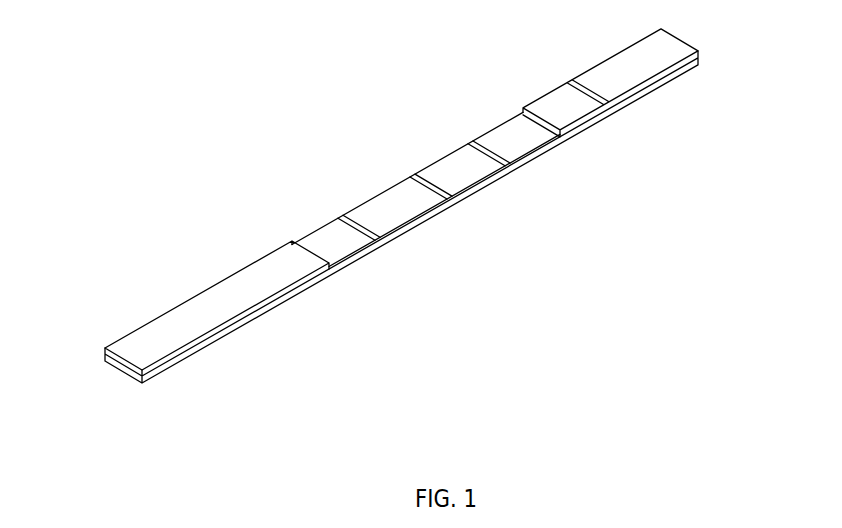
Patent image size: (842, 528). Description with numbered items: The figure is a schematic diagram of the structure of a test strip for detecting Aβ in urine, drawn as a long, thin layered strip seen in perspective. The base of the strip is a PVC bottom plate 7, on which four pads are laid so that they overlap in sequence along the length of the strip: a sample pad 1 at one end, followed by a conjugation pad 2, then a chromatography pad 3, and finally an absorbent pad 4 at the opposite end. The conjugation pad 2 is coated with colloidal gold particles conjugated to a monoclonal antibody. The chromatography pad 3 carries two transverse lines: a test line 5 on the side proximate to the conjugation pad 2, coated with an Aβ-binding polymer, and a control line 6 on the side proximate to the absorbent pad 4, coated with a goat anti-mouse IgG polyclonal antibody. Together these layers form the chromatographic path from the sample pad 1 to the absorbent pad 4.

The sample pad 1 is at (647, 70).
The conjugation pad 2 is at (513, 133).
The chromatography pad 3 is at (449, 168).
The absorbent pad 4 is at (240, 280).
The test line 5 is at (450, 205).
The control line 6 is at (338, 219).
The PVC bottom plate 7 is at (260, 318).